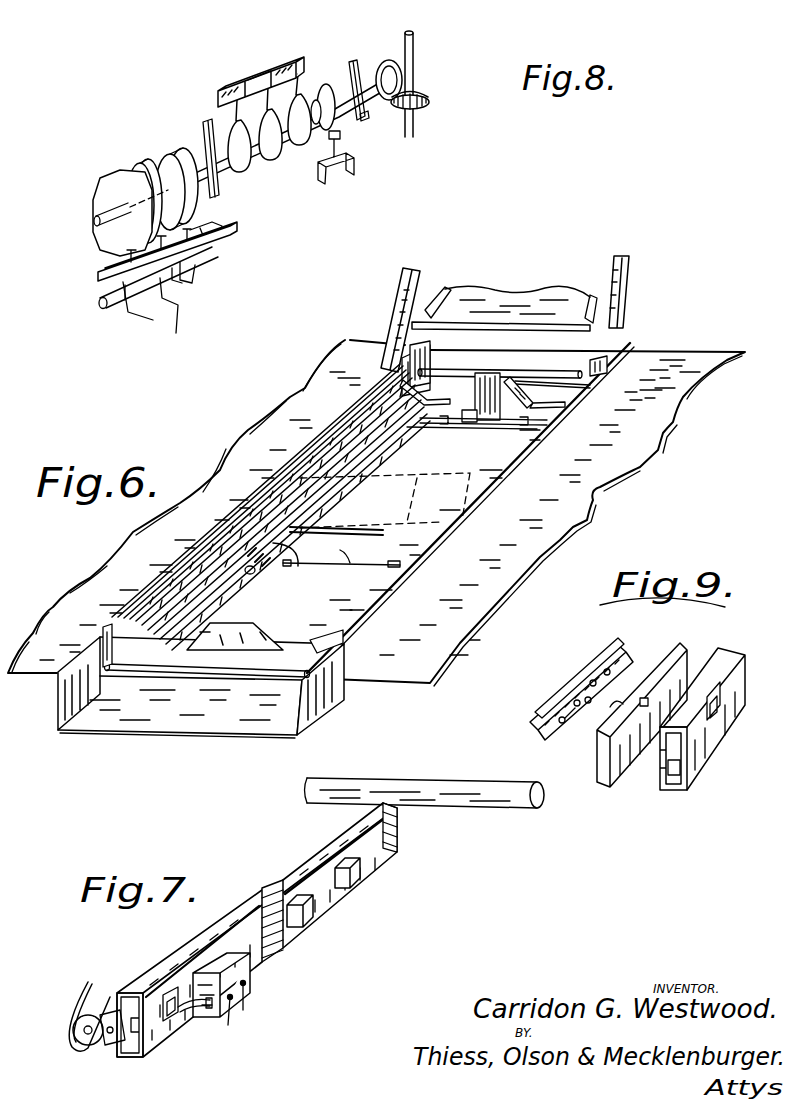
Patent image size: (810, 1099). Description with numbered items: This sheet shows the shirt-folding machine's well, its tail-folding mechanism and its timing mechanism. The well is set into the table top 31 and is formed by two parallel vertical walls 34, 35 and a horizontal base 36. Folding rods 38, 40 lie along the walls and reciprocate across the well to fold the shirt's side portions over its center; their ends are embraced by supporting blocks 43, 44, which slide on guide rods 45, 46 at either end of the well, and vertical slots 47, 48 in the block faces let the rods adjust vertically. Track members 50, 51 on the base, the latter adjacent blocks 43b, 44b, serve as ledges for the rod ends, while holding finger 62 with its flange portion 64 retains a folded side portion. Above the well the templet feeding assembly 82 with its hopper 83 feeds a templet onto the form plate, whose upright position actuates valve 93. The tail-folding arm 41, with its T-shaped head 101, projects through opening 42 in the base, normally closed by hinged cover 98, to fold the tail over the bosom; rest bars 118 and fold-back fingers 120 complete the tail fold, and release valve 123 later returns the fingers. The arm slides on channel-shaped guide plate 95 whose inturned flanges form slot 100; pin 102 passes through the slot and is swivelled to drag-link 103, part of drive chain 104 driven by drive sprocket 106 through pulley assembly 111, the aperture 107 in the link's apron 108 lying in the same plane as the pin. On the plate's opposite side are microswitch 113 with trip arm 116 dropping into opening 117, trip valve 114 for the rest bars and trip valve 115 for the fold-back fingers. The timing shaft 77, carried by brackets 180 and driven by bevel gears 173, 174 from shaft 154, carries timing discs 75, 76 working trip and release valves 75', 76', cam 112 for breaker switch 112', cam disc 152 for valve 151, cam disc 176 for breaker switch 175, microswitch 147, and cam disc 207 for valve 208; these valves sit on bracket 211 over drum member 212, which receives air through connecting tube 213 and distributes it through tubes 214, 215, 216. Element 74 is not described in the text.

In FIG. 6, the table top 31 is at (694, 424).
In FIG. 6, the well wall 34 is at (57, 705).
In FIG. 6, the well wall 35 is at (303, 716).
In FIG. 6, the well base 36 is at (232, 736).
In FIG. 6, the folding rod 38 is at (350, 416).
In FIG. 6, the folding rod 40 is at (580, 402).
In FIG. 6, the tail-folding arm 41 is at (460, 521).
In FIG. 9, the tail-folding arm 41 is at (678, 639).
In FIG. 7, the tail-folding arm 41 is at (378, 814).
In FIG. 6, the opening 42 is at (295, 568).
In FIG. 6, the supporting block 43 is at (443, 363).
In FIG. 6, the supporting block 43b is at (106, 630).
In FIG. 6, the supporting block 44 is at (601, 349).
In FIG. 6, the supporting block 44b is at (336, 646).
In FIG. 6, the guide rod 45 is at (542, 370).
In FIG. 6, the guide rod 46 is at (205, 678).
In FIG. 6, the slot 47 is at (394, 368).
In FIG. 6, the slot 48 is at (595, 379).
In FIG. 6, the track member 50 is at (492, 398).
In FIG. 6, the track member 51 is at (255, 627).
In FIG. 6, the holding finger 62 is at (266, 526).
In FIG. 6, the flange portion 64 is at (286, 502).
In FIG. 6, the rail 74 is at (252, 562).
In FIG. 8, the timing disc 75 is at (117, 222).
In FIG. 8, the trip and release valve 75' is at (126, 275).
In FIG. 8, the timing disc 76 is at (142, 183).
In FIG. 8, the trip and release valve 76' is at (201, 291).
In FIG. 8, the timing shaft 77 is at (368, 68).
In FIG. 6, the templet feeding assembly 82 is at (657, 286).
In FIG. 6, the hopper 83 is at (421, 272).
In FIG. 6, the valve 93 is at (470, 408).
In FIG. 9, the guide plate 95 is at (690, 790).
In FIG. 7, the guide plate 95 is at (303, 866).
In FIG. 6, the hinged cover 98 is at (351, 566).
In FIG. 9, the slot 100 is at (670, 765).
In FIG. 7, the slot 100 is at (125, 992).
In FIG. 6, the head 101 is at (518, 472).
In FIG. 7, the head 101 is at (425, 780).
In FIG. 9, the pin 102 is at (617, 700).
In FIG. 9, the drag-link 103 is at (578, 682).
In FIG. 9, the drive chain 104 is at (592, 652).
In FIG. 7, the drive sprocket 106 is at (74, 1040).
In FIG. 9, the aperture 107 is at (589, 706).
In FIG. 8, the apron 108 is at (246, 165).
In FIG. 9, the apron 108 is at (567, 722).
In FIG. 7, the pulley assembly 111 is at (78, 972).
In FIG. 8, the cam 112 is at (290, 147).
In FIG. 8, the breaker switch 112' is at (272, 84).
In FIG. 7, the microswitch 113 is at (250, 968).
In FIG. 7, the trip valve 114 is at (313, 915).
In FIG. 7, the trip valve 115 is at (353, 882).
In FIG. 7, the trip arm 116 is at (203, 1012).
In FIG. 9, the opening 117 is at (722, 715).
In FIG. 7, the opening 117 is at (172, 1022).
In FIG. 6, the rest bar 118 is at (345, 434).
In FIG. 6, the fold-back finger 120 is at (322, 466).
In FIG. 6, the release valve 123 is at (527, 390).
In FIG. 8, the microswitch 147 is at (230, 86).
In FIG. 8, the trip and release valve 151 is at (343, 142).
In FIG. 8, the cam disc 152 is at (325, 90).
In FIG. 8, the shaft 154 is at (414, 38).
In FIG. 8, the bevel gear 173 is at (431, 100).
In FIG. 8, the bevel gear 174 is at (403, 72).
In FIG. 8, the breaker switch 175 is at (283, 66).
In FIG. 8, the cam disc 176 is at (312, 100).
In FIG. 8, the bracket 180 is at (203, 121).
In FIG. 8, the cam disc 207 is at (168, 160).
In FIG. 8, the trip and release valve 208 is at (222, 232).
In FIG. 8, the bracket 211 is at (104, 307).
In FIG. 8, the drum member 212 is at (208, 262).
In FIG. 8, the connecting tube 213 is at (222, 243).
In FIG. 8, the tube 214 is at (134, 318).
In FIG. 8, the tube 215 is at (177, 310).
In FIG. 8, the tube 216 is at (178, 276).